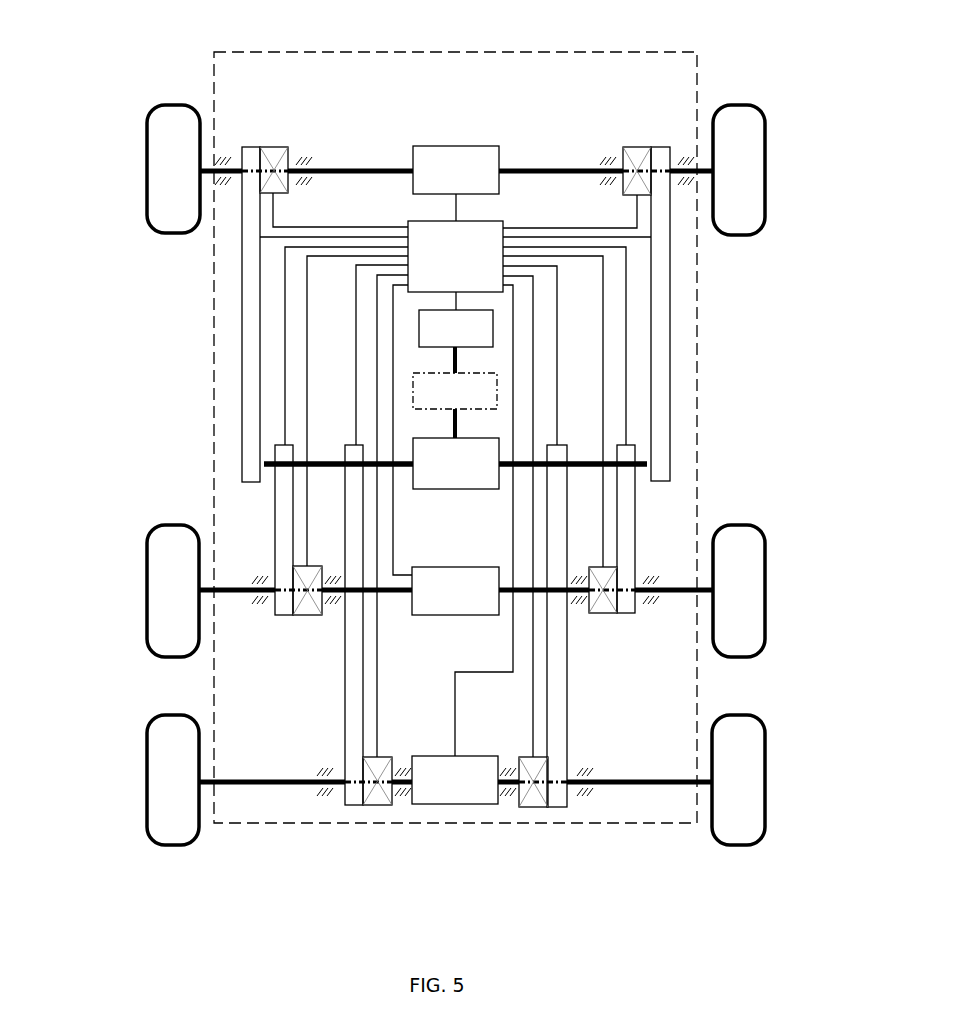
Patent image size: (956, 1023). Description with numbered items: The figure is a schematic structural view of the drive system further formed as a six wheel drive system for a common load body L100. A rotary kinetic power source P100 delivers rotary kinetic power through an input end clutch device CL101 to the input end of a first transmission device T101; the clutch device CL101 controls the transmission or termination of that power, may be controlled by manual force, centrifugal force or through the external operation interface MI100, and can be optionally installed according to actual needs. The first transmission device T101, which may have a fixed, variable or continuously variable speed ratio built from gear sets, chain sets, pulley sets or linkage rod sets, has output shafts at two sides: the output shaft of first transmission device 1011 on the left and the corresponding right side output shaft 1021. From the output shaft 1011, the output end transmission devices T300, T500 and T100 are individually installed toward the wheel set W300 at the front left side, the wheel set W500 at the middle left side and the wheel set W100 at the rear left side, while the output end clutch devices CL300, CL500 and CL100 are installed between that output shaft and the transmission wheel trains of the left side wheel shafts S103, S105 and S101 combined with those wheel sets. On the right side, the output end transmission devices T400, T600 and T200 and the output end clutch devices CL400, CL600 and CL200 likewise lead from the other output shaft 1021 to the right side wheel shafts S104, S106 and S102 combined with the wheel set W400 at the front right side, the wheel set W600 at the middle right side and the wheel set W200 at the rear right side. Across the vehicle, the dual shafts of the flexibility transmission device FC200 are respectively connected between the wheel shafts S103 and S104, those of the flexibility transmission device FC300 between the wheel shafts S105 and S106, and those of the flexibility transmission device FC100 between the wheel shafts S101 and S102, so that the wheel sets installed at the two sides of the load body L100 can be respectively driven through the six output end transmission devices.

The common load body L100 is at (394, 50).
The wheel set W100 is at (163, 793).
The wheel set W200 is at (750, 792).
The wheel set W300 is at (163, 188).
The wheel set W400 is at (752, 188).
The wheel set W500 is at (163, 603).
The wheel set W600 is at (752, 605).
The left side wheel shaft S101 is at (262, 783).
The right side wheel shaft S102 is at (618, 785).
The left side wheel shaft S103 is at (206, 166).
The right side wheel shaft S104 is at (703, 168).
The left side wheel shaft S105 is at (237, 593).
The right side wheel shaft S106 is at (678, 597).
The output end transmission device T100 is at (353, 707).
The output end transmission device T200 is at (557, 719).
The output end transmission device T300 is at (253, 333).
The output end transmission device T400 is at (662, 310).
The output end transmission device T500 is at (280, 542).
The output end transmission device T600 is at (622, 553).
The first transmission device T101 is at (455, 463).
The output end clutch device CL100 is at (377, 793).
The output end clutch device CL200 is at (533, 795).
The output end clutch device CL300 is at (273, 152).
The output end clutch device CL400 is at (635, 150).
The output end clutch device CL500 is at (305, 602).
The output end clutch device CL600 is at (607, 605).
The input end clutch device CL101 is at (455, 405).
The flexibility transmission device FC100 is at (455, 780).
The flexibility transmission device FC200 is at (456, 183).
The flexibility transmission device FC300 is at (455, 591).
The external operation interface MI100 is at (455, 475).
The rotary kinetic power source P100 is at (456, 341).
The output shaft of first transmission device 1011 is at (403, 468).
The second output shaft 1021 is at (505, 467).